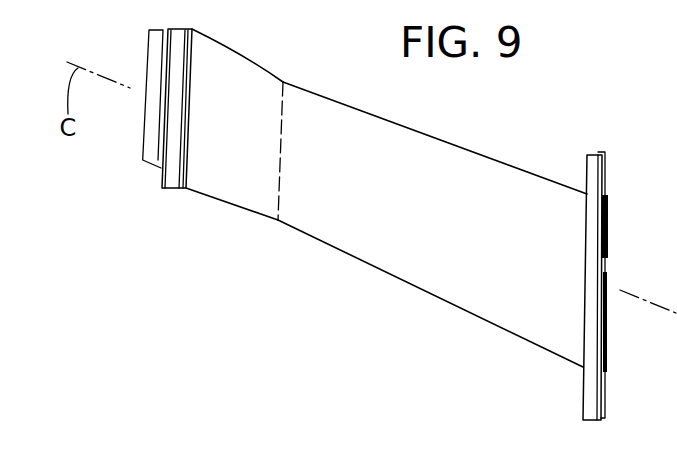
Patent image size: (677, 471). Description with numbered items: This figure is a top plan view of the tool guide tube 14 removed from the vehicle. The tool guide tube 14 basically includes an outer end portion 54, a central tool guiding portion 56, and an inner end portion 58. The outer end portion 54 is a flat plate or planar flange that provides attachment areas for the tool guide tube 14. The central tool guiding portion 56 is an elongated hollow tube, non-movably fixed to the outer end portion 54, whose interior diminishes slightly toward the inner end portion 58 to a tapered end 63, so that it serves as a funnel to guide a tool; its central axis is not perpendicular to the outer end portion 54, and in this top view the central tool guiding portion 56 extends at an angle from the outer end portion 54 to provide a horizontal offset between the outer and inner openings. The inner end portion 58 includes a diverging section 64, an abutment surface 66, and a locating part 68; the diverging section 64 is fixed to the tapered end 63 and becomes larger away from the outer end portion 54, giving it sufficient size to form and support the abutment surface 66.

The tool guide tube 14 is at (506, 114).
The outer end portion 54 is at (603, 163).
The central tool guiding portion 56 is at (405, 170).
The inner end portion 58 is at (65, 209).
The tapered end 63 is at (286, 92).
The diverging section 64 is at (214, 172).
The abutment surface 66 is at (163, 180).
The locating part 68 is at (150, 134).